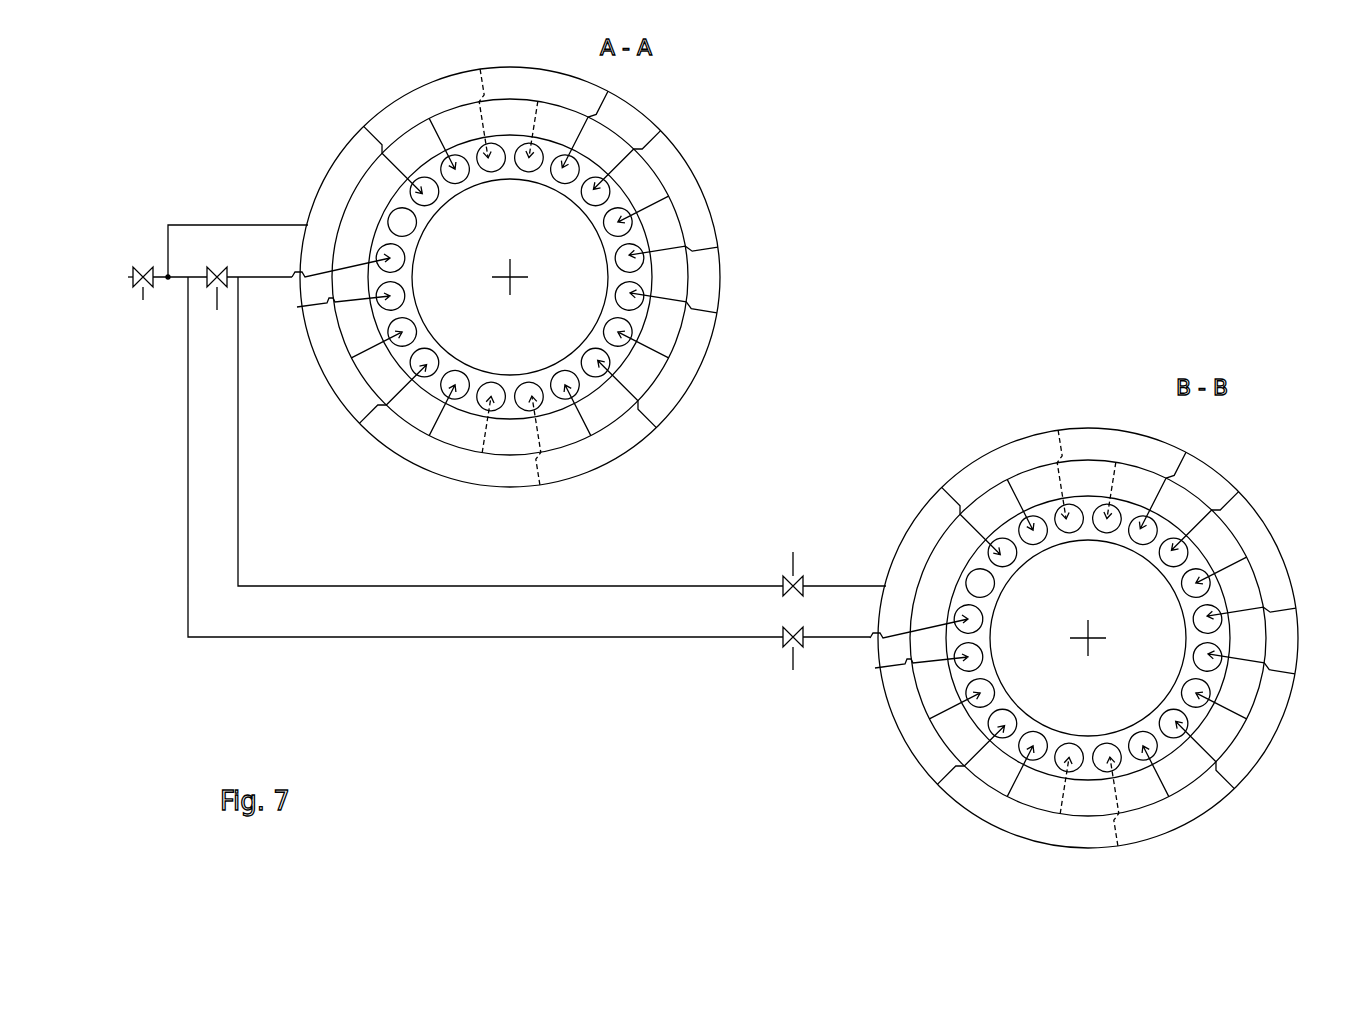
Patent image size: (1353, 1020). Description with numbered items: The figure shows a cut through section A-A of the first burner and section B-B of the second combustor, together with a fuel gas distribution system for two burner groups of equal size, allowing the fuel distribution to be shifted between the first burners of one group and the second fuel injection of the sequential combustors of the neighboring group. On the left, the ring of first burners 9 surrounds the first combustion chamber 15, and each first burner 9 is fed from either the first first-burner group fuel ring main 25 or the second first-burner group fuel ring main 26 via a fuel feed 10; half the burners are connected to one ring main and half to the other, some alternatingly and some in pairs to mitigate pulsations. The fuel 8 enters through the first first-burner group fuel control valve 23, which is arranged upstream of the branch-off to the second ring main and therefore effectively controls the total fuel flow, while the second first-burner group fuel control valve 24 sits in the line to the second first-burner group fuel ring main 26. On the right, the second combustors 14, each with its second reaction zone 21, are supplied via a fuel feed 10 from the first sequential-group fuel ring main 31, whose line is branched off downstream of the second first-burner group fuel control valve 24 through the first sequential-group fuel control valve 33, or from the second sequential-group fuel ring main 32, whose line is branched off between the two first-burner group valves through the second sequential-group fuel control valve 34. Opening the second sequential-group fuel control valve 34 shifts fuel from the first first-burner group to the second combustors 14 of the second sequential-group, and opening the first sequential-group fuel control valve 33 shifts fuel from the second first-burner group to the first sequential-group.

The fuel 8 is at (124, 278).
The first burner 9 is at (618, 222).
The fuel feed 10 is at (980, 583).
The second combustor 14 is at (1196, 583).
The first combustion chamber 15 is at (589, 387).
The second reaction zone 21 is at (1167, 748).
The first first-burner group fuel control valve 23 is at (144, 294).
The second first-burner group fuel control valve 24 is at (217, 300).
The first first-burner group fuel ring main 25 is at (393, 450).
The second first-burner group fuel ring main 26 is at (390, 338).
The first sequential-group fuel ring main 31 is at (971, 812).
The second sequential-group fuel ring main 32 is at (968, 699).
The first sequential-group fuel control valve 33 is at (793, 564).
The second sequential-group fuel control valve 34 is at (793, 659).